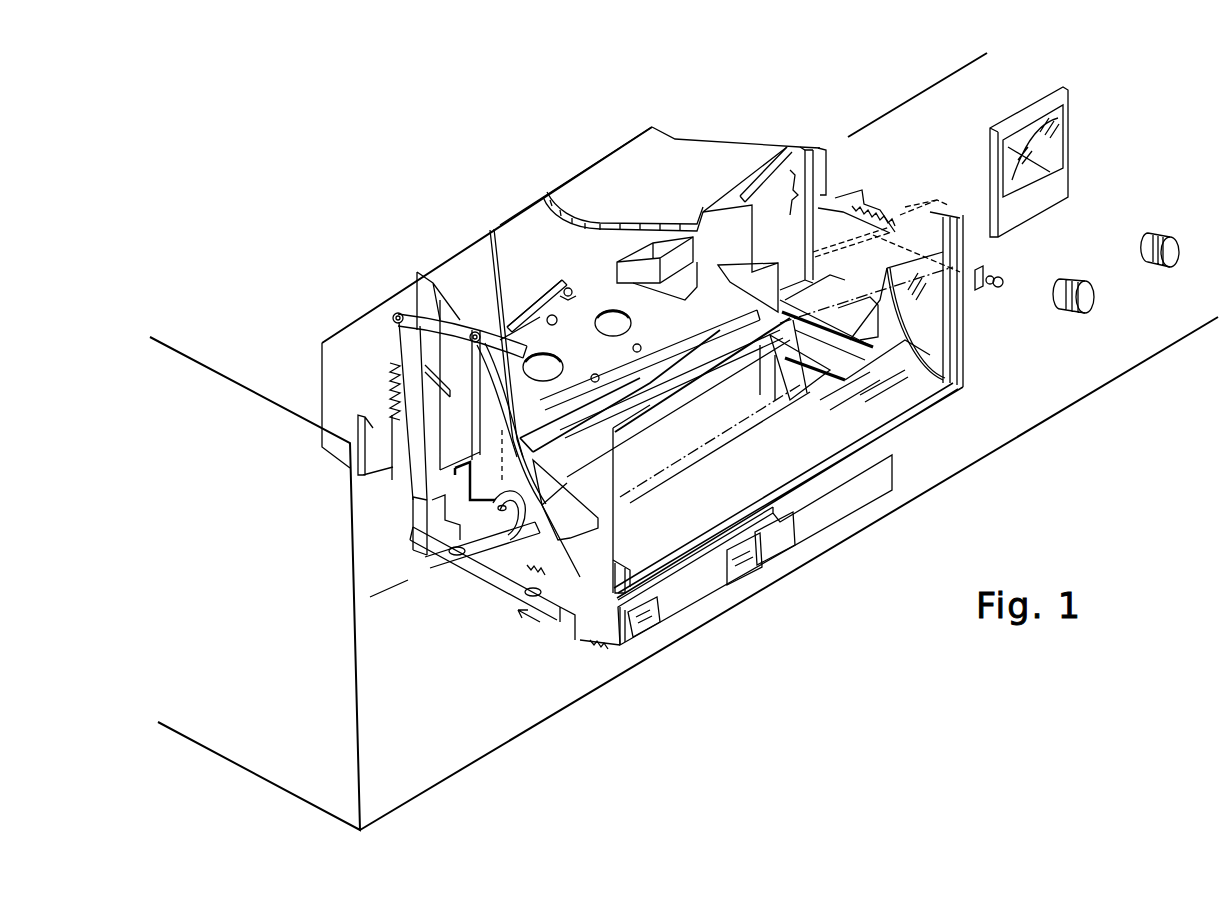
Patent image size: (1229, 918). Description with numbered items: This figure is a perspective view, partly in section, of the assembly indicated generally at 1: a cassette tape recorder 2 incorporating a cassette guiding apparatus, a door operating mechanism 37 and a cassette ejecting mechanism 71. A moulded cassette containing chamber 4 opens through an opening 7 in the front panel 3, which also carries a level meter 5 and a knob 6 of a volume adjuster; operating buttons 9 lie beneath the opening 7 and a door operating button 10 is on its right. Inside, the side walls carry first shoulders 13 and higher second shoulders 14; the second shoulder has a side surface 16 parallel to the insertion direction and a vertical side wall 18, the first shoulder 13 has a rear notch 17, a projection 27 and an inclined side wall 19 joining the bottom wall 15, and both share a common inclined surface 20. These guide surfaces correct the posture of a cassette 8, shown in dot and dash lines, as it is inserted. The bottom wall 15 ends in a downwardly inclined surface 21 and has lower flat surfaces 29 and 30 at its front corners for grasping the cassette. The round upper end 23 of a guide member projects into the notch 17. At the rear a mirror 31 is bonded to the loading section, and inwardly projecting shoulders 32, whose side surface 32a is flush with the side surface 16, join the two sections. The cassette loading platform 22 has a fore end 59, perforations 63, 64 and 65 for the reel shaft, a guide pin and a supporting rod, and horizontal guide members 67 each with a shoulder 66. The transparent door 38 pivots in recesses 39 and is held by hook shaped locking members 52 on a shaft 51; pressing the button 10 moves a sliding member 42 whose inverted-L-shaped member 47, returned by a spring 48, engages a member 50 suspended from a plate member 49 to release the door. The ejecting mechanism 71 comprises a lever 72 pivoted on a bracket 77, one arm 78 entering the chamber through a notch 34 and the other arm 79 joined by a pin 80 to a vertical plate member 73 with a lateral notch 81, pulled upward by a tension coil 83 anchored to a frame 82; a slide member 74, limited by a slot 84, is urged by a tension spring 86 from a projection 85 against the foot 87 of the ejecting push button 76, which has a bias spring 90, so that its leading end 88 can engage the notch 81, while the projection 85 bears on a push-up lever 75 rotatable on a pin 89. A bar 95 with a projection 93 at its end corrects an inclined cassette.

The typewriter / printing apparatus 1 is at (549, 148).
The cassette tape recorder 2 is at (205, 378).
The front panel 3 is at (1070, 388).
The cassette containing chamber 4 is at (740, 145).
The level meter 5 is at (1068, 180).
The knob 6 is at (1094, 300).
The opening 7 is at (870, 432).
The cassette 8 is at (795, 437).
The operating buttons 9 is at (748, 590).
The door operating button 10 is at (985, 286).
The first shoulders 13 is at (858, 380).
The second shoulders 14 is at (840, 306).
The bottom wall 15 is at (800, 503).
The side surface 16 is at (805, 375).
The notch 17 is at (775, 360).
The side wall 18 is at (862, 324).
The side wall 19 is at (845, 430).
The inclined surface 20 is at (905, 327).
The downwardly inclined surface 21 is at (680, 410).
The cassette loading platform 22 is at (590, 288).
The round upper end 23 is at (700, 312).
The projection 27 is at (740, 342).
The flat surface 29 is at (940, 395).
The flat surface 30 is at (710, 583).
The mirror 31 is at (503, 222).
The shoulders 32 is at (725, 282).
The side surface 32a is at (812, 278).
The notch 34 is at (548, 440).
The door operating mechanism 37 is at (912, 173).
The door 38 is at (975, 348).
The recesses 39 is at (940, 197).
The sliding member 42 is at (875, 206).
The vertical inverted-L-shaped member 47 is at (860, 192).
The spring 48 is at (905, 212).
The plate member 49 is at (795, 146).
The member 50 is at (835, 160).
The shaft 51 is at (760, 195).
The door locking members 52 is at (790, 205).
The fore end 59 is at (645, 385).
The perforation 63 is at (612, 310).
The perforation 64 is at (596, 372).
The perforation 65 is at (556, 324).
The shoulder 66 is at (672, 232).
The horizontal guide members 67 is at (640, 225).
The cassette ejecting mechanism 71 is at (353, 605).
The lever 72 is at (470, 330).
The plate member 73 is at (382, 505).
The sliding member 74 is at (487, 575).
The push-up lever 75 is at (476, 510).
The ejecting push button 76 is at (665, 618).
The bracket 77 is at (448, 400).
The arm 78 is at (580, 417).
The arm 79 is at (407, 300).
The pin 80 is at (393, 320).
The lateral notch 81 is at (398, 528).
The frame 82 is at (452, 400).
The tension coil 83 is at (388, 385).
The slot 84 is at (545, 620).
The projection 85 is at (514, 617).
The tension spring 86 is at (572, 628).
The foot 87 is at (590, 650).
The leading end 88 is at (443, 530).
The pin 89 is at (478, 495).
The bias spring 90 is at (618, 645).
The projection 93 is at (570, 285).
The bar 95 is at (532, 295).